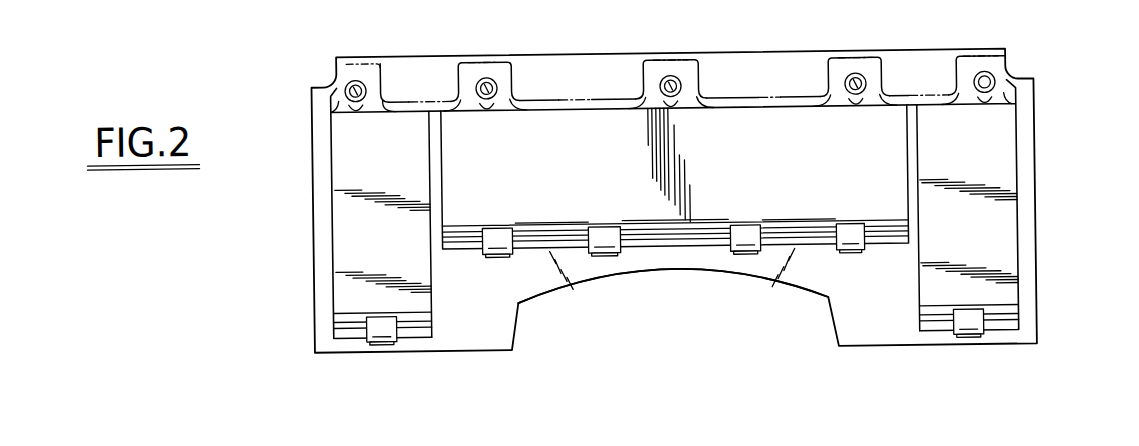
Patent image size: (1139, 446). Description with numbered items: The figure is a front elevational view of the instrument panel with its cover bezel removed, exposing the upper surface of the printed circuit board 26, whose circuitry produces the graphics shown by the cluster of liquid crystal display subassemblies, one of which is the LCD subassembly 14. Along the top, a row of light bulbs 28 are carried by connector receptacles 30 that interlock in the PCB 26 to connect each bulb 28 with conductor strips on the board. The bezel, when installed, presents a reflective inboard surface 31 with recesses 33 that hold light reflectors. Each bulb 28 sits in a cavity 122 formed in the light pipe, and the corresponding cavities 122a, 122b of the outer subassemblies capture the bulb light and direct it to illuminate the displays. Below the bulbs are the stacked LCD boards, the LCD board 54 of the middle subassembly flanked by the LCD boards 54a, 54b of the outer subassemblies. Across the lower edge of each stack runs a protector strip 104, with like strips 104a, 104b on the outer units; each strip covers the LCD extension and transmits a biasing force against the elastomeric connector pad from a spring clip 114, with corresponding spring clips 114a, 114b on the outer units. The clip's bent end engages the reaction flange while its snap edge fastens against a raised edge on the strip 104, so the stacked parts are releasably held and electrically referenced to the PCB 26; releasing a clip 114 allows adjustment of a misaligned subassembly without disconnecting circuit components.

The liquid crystal display subassembly 14 is at (673, 176).
The printed circuit board 26 is at (590, 270).
The light bulb 28 is at (364, 79).
The connector receptacle 30 is at (353, 78).
The reflective inboard surface 31 is at (597, 101).
The recess 33 is at (486, 60).
The LCD board 54 is at (898, 150).
The LCD board 54a is at (340, 216).
The LCD board 54b is at (1002, 174).
The protector strip 104 is at (717, 223).
The protector strip 104a is at (432, 337).
The protector strip 104b is at (1008, 327).
The spring clip 114 is at (502, 258).
The spring clip 114a is at (380, 340).
The spring clip 114b is at (960, 341).
The cavity 122 is at (489, 110).
The cavity 122a is at (358, 104).
The cavity 122b is at (1003, 84).